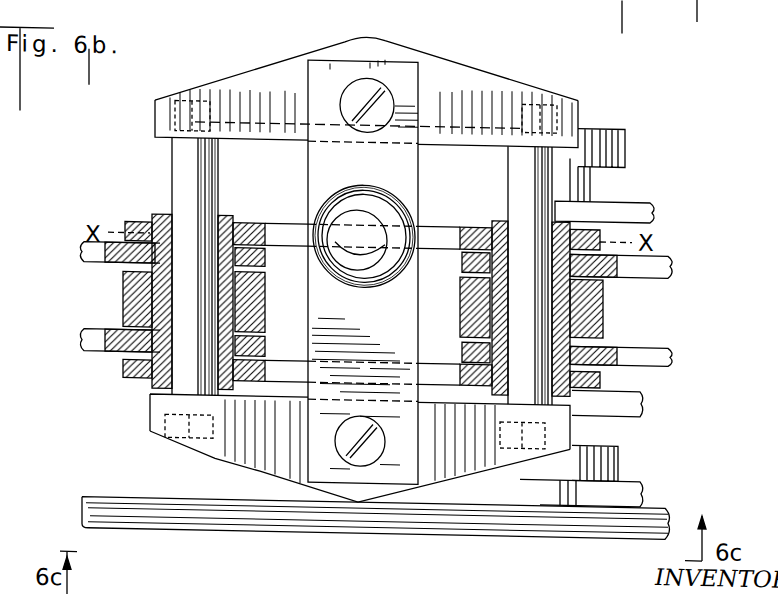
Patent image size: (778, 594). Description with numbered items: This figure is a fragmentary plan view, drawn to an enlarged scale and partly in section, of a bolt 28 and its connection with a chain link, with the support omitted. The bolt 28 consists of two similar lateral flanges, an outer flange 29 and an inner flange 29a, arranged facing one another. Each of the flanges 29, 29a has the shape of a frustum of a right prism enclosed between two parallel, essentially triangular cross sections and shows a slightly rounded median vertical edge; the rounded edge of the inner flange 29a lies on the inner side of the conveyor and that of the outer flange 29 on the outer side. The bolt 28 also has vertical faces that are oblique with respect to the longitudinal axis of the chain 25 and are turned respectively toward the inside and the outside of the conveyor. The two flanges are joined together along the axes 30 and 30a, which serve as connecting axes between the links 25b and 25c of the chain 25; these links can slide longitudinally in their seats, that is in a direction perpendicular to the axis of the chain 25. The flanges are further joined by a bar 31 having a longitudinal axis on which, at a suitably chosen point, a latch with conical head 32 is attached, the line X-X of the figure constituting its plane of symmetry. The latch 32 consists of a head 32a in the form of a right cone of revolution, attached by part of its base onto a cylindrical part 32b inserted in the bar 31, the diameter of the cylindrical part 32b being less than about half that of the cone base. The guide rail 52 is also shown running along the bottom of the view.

The chain 25 is at (107, 374).
The chain link 25b is at (457, 230).
The chain link 25c is at (667, 252).
The bolt 28 is at (263, 54).
The outer flange 29 is at (148, 414).
The inner flange 29a is at (187, 97).
The axis 30 is at (172, 170).
The axis 30a is at (553, 174).
The bar 31 is at (425, 99).
The latch with conical head 32 is at (402, 155).
The head 32a is at (327, 183).
The cylindrical part 32b is at (393, 280).
The guide rail 52 is at (123, 523).